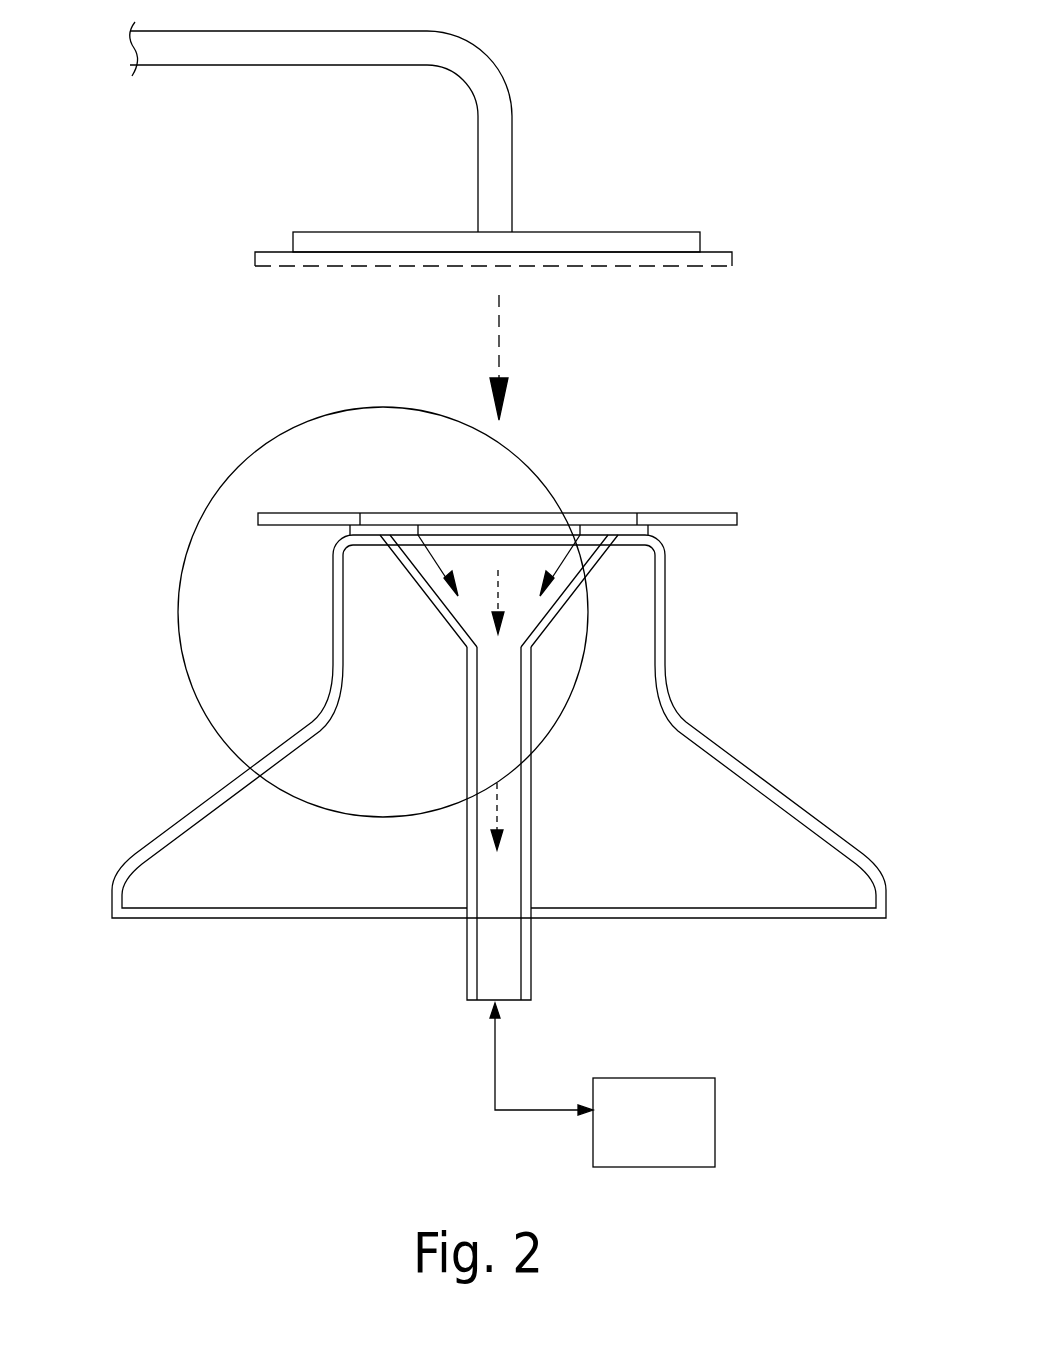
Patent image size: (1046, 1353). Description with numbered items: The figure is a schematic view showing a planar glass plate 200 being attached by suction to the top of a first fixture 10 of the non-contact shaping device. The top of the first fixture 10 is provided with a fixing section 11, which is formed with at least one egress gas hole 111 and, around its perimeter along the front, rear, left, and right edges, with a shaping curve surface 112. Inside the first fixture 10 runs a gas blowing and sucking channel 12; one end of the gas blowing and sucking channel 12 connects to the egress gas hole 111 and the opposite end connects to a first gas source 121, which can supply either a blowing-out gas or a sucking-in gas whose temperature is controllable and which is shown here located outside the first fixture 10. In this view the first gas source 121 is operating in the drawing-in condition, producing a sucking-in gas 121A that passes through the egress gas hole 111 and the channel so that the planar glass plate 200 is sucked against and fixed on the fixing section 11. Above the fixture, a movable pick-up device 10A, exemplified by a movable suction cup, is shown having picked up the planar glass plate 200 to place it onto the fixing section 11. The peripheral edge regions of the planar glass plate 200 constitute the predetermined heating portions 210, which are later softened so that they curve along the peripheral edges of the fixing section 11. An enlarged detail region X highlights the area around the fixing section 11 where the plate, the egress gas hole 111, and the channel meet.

The first fixture 10 is at (461, 792).
The movable pick-up device 10A is at (611, 232).
The fixing section 11 is at (667, 613).
The gas blowing and sucking channel 12 is at (488, 935).
The egress gas hole 111 is at (515, 533).
The shaping curve surface 112 is at (343, 520).
The first gas source 121 is at (667, 1078).
The sucking-in gas 121A is at (440, 563).
The planar glass plate 200 is at (724, 252).
The predetermined heating portions 210 is at (288, 518).
The detail region X is at (190, 657).